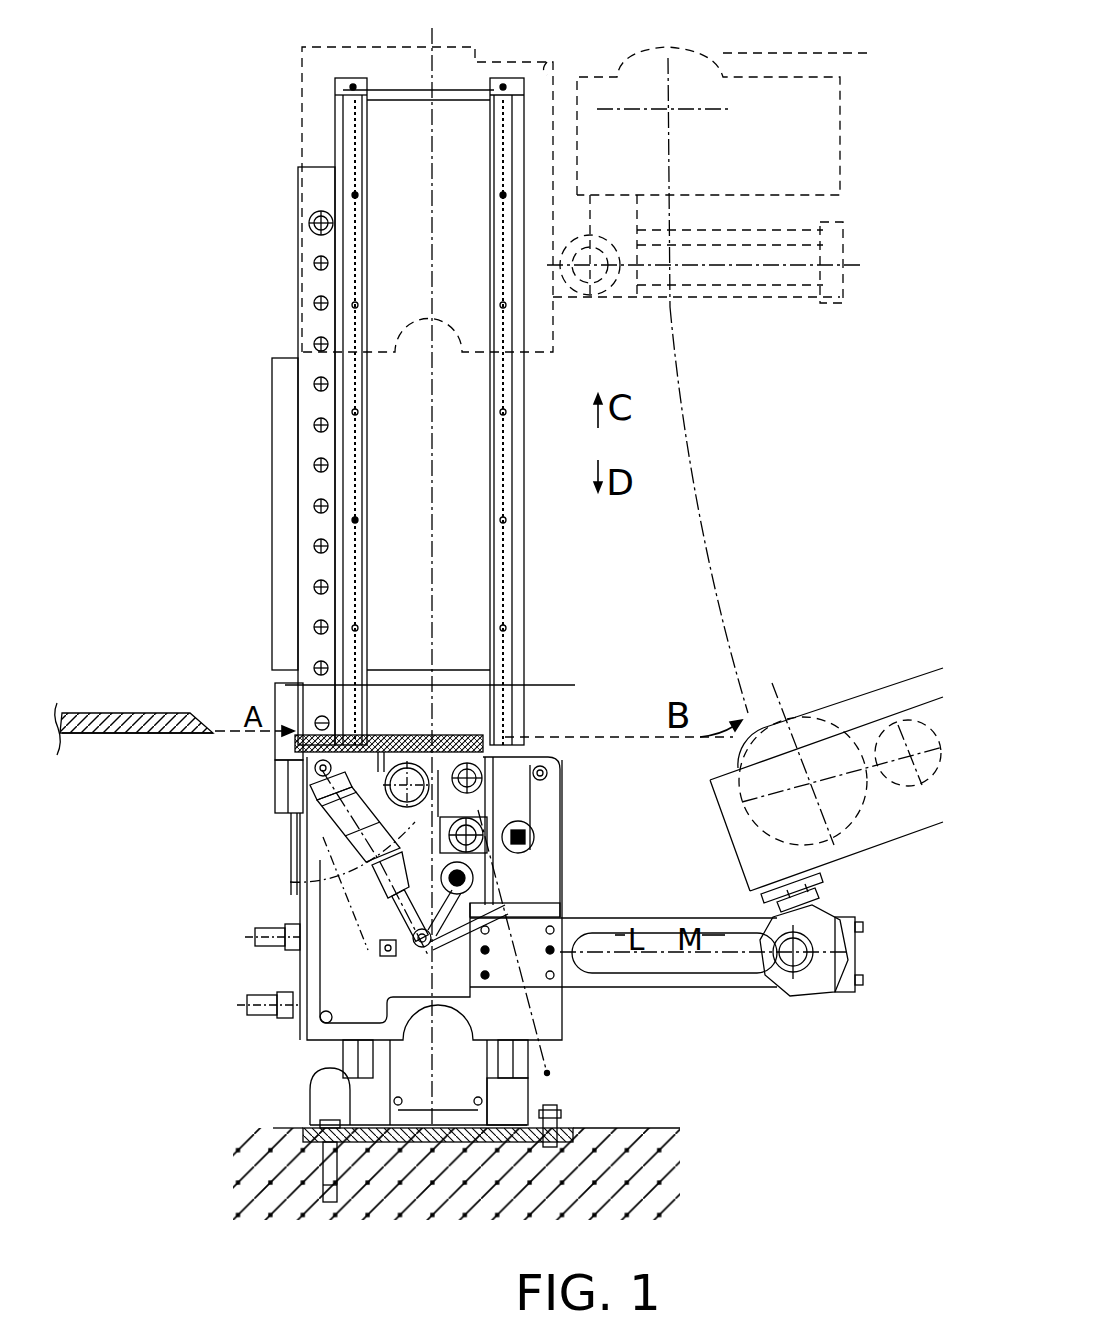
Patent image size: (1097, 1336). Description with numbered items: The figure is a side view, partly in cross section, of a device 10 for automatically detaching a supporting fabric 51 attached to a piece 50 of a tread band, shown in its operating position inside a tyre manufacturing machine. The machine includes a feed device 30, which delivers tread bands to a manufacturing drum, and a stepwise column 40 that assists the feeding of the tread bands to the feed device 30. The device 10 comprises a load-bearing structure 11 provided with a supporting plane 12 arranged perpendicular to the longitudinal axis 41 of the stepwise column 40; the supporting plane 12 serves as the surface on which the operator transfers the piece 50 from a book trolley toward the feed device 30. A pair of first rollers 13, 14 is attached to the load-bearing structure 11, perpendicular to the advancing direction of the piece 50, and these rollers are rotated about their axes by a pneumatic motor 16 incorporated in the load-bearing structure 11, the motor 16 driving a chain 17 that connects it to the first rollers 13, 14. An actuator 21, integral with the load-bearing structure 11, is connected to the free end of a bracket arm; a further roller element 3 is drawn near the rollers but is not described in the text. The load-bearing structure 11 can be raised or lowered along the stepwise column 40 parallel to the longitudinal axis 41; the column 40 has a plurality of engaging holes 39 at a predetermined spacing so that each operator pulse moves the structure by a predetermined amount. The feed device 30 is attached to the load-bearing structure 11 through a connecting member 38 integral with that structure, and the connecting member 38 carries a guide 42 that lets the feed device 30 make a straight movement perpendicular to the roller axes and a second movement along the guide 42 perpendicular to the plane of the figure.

The guide roller 3 is at (535, 832).
The device 10 is at (232, 787).
The load-bearing structure 11 is at (320, 966).
The supporting plane 12 is at (458, 733).
The first roller 13 is at (484, 780).
The first roller 14 is at (487, 845).
The pneumatic motor 16 is at (399, 743).
The chain 17 is at (345, 825).
The actuator 21 is at (385, 868).
The feed device 30 is at (862, 748).
The connecting member 38 is at (750, 978).
The engaging holes 39 is at (321, 425).
The stepwise column 40 is at (405, 225).
The longitudinal axis 41 is at (428, 105).
The guide 42 is at (655, 962).
The piece of a tread band 50 is at (168, 662).
The supporting fabric 51 is at (117, 733).